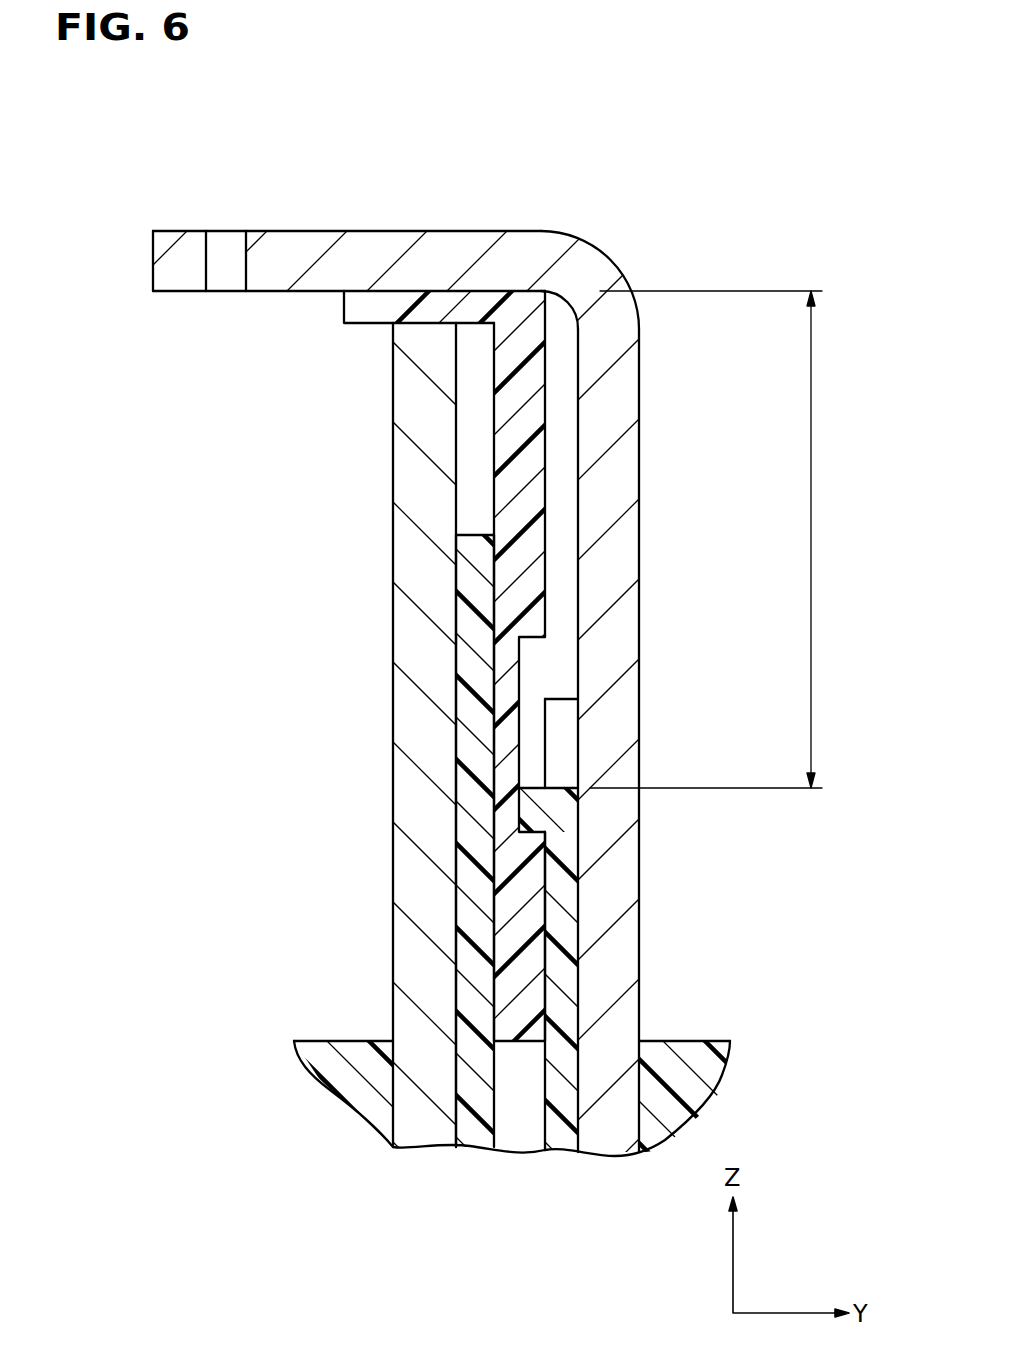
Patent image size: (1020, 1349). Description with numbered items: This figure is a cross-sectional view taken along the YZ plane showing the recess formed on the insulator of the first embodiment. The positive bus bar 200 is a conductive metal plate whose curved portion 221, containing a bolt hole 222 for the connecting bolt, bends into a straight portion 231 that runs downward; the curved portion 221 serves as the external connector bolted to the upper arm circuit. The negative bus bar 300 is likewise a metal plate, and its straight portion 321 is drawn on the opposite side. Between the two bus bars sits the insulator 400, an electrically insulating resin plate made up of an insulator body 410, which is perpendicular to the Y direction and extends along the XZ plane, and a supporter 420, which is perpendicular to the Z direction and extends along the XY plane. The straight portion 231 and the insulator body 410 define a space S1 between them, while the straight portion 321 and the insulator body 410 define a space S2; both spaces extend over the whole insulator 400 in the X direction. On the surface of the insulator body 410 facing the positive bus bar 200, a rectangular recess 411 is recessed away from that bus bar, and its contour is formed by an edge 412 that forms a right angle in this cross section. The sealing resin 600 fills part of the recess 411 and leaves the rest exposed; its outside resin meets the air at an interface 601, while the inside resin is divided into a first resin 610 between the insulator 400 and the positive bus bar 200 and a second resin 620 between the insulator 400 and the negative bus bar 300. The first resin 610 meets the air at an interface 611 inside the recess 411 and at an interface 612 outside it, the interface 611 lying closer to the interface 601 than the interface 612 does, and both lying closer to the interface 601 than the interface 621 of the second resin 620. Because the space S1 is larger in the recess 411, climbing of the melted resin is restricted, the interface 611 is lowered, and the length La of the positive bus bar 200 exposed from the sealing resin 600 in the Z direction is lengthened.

The positive bus bar 200 is at (510, 674).
The curved portion 221 is at (400, 231).
The bolt hole 222 is at (228, 231).
The straight portion 231 is at (640, 525).
The negative bus bar 300 is at (510, 674).
The straight portion 321 is at (393, 694).
The insulator 400 is at (510, 674).
The insulator body 410 is at (512, 388).
The recess 411 is at (524, 638).
The edge 412 is at (557, 830).
The supporter 420 is at (370, 315).
The sealing resin 600 is at (510, 674).
The interface 601 is at (366, 1041).
The first resin 610 is at (510, 674).
The interface 611 is at (557, 788).
The interface 612 is at (558, 698).
The second resin 620 is at (510, 674).
The interface 621 is at (480, 537).
The space S1 is at (560, 492).
The space S2 is at (477, 430).
The length La is at (722, 539).